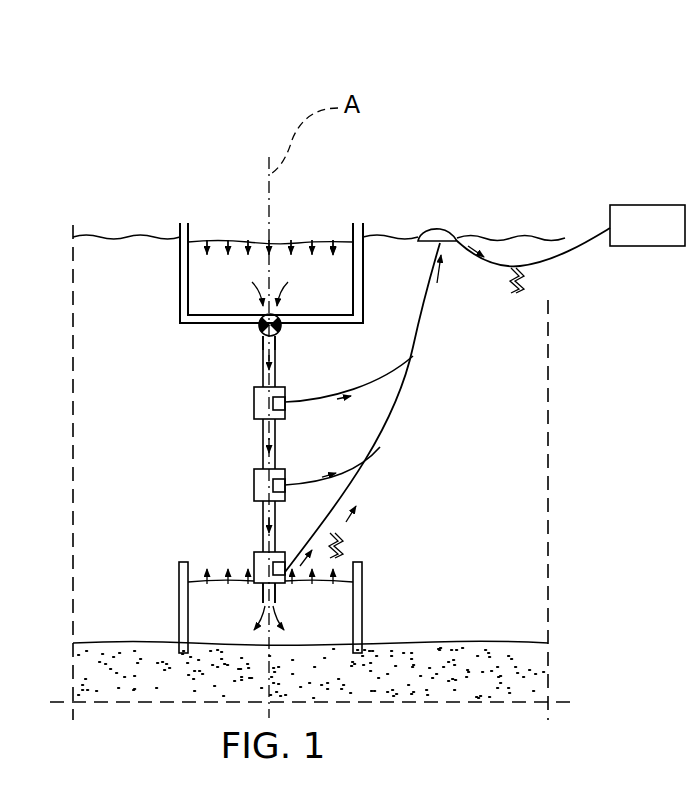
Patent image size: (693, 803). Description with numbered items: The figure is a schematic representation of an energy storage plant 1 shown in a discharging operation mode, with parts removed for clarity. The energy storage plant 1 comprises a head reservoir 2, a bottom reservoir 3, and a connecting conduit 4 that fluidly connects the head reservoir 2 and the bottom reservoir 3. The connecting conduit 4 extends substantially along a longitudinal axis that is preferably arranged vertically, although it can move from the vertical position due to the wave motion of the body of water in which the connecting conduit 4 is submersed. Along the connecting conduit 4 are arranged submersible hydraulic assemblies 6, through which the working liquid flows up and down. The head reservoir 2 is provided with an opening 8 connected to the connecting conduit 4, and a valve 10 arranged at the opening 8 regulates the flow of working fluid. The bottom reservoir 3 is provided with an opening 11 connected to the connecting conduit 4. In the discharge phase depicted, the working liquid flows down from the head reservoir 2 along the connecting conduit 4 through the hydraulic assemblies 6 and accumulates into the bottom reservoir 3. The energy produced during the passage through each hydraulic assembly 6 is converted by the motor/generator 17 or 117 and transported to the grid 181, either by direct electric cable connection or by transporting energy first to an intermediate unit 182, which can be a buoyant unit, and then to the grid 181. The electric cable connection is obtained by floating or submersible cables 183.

The energy storage plant 1 is at (541, 108).
The head reservoir 2 is at (180, 300).
The bottom reservoir 3 is at (181, 614).
The connecting conduit 4 is at (263, 367).
The submersible hydraulic assembly 6 is at (253, 406).
The opening 8 is at (284, 328).
The valve 10 is at (262, 333).
The opening 11 is at (281, 597).
The motor/generator 17 is at (285, 402).
The motor/generator 117 is at (349, 420).
The grid 181 is at (640, 205).
The intermediate unit 182 is at (429, 228).
The cables 183 is at (407, 400).